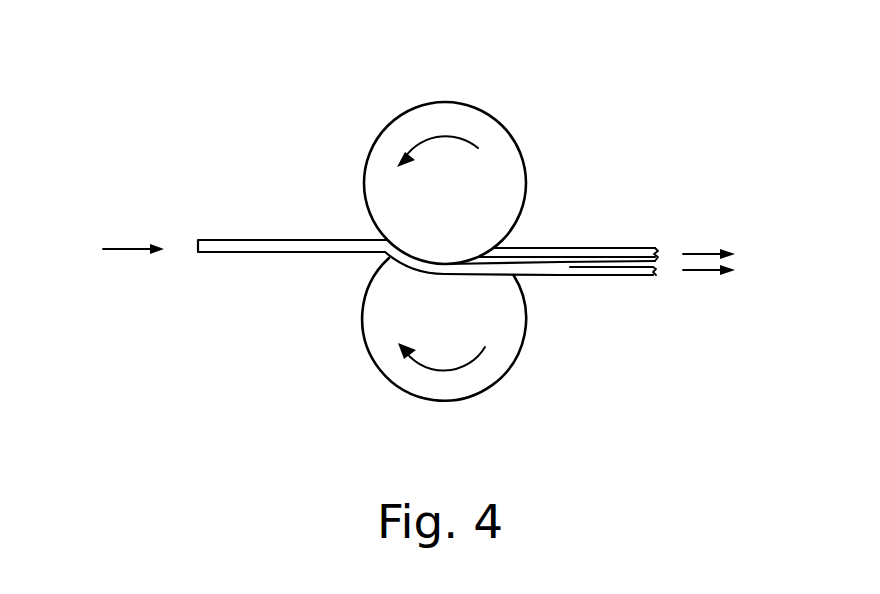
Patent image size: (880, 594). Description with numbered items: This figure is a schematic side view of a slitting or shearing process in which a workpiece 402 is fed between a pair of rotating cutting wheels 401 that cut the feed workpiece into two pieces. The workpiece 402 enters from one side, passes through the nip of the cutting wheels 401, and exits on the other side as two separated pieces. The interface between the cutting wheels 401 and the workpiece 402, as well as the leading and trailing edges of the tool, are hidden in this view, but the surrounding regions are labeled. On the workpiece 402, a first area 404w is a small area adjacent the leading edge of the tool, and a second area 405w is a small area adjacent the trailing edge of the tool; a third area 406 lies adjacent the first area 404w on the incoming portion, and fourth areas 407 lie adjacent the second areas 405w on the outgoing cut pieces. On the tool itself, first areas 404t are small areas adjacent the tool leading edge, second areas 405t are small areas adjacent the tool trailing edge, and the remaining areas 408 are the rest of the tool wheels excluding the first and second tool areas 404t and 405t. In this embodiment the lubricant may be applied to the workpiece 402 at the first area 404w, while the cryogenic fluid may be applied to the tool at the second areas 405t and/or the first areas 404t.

The cutting wheels 401 is at (459, 248).
The workpiece 402 is at (198, 247).
The first areas of the tool 404t is at (368, 221).
The first area of the workpiece 404w is at (325, 240).
The second areas of the tool 405t is at (524, 208).
The second area of the workpiece 405w is at (538, 247).
The third area of the workpiece 406 is at (283, 240).
The fourth areas of the workpiece 407 is at (624, 247).
The remaining areas of the tool wheels 408 is at (475, 108).